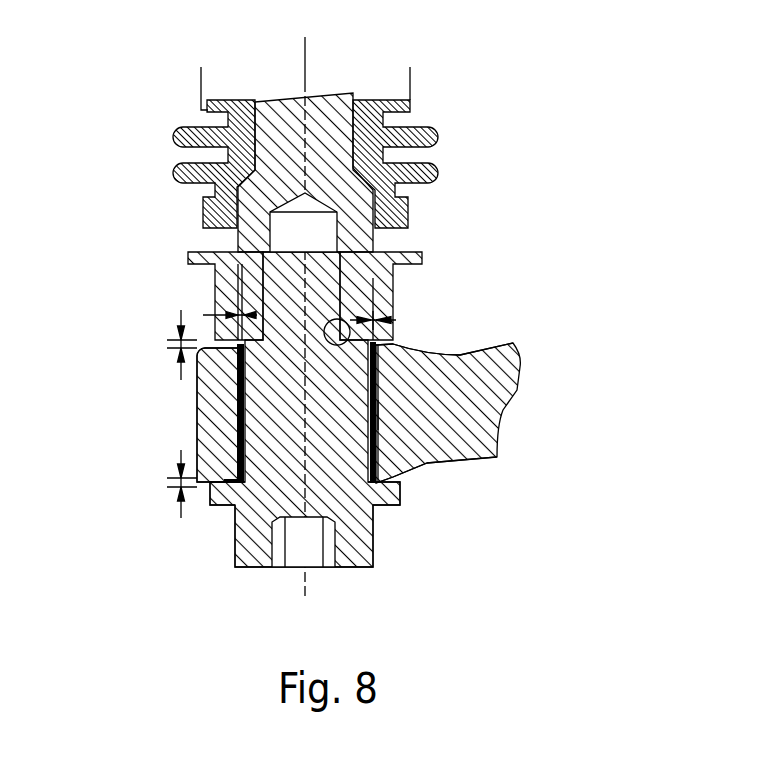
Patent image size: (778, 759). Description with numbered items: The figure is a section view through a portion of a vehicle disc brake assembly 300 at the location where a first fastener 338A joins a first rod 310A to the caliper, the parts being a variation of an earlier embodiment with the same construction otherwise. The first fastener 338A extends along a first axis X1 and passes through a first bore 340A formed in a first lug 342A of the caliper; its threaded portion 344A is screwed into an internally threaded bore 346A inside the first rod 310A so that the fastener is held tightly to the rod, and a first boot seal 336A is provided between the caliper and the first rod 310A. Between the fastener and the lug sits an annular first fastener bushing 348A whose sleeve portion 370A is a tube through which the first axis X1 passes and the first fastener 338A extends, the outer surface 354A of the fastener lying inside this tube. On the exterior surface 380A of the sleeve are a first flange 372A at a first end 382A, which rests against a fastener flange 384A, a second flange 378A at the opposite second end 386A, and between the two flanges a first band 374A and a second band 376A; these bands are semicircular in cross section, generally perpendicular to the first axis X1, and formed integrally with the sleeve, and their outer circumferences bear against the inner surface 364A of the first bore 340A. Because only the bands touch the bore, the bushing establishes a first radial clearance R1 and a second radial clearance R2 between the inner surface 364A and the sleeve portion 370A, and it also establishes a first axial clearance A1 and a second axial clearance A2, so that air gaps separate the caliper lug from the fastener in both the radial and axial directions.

The vehicle disc brake assembly 300 is at (172, 100).
The first axis X1 is at (305, 58).
The first rod 310A is at (345, 97).
The first boot seal 336A is at (436, 133).
The internally threaded bore 346A is at (248, 233).
The threaded portion 344A is at (397, 283).
The second end 386A is at (397, 296).
The second flange 378A is at (397, 327).
The sleeve portion 370A is at (342, 450).
The first fastener 338A is at (263, 572).
The outer surface 354A is at (260, 510).
The first end 382A is at (377, 486).
The first bore 340A is at (197, 375).
The inner surface 364A is at (197, 441).
The first lug 342A is at (197, 422).
The first flange 372A is at (497, 458).
The exterior surface 380A is at (518, 357).
The second band 376A is at (490, 345).
The first fastener bushing 348A is at (377, 415).
The first band 374A is at (395, 450).
The fastener flange 384A is at (390, 435).
The first radial clearance R1 is at (210, 313).
The second radial clearance R2 is at (399, 319).
The first axial clearance A1 is at (181, 378).
The second axial clearance A2 is at (181, 500).